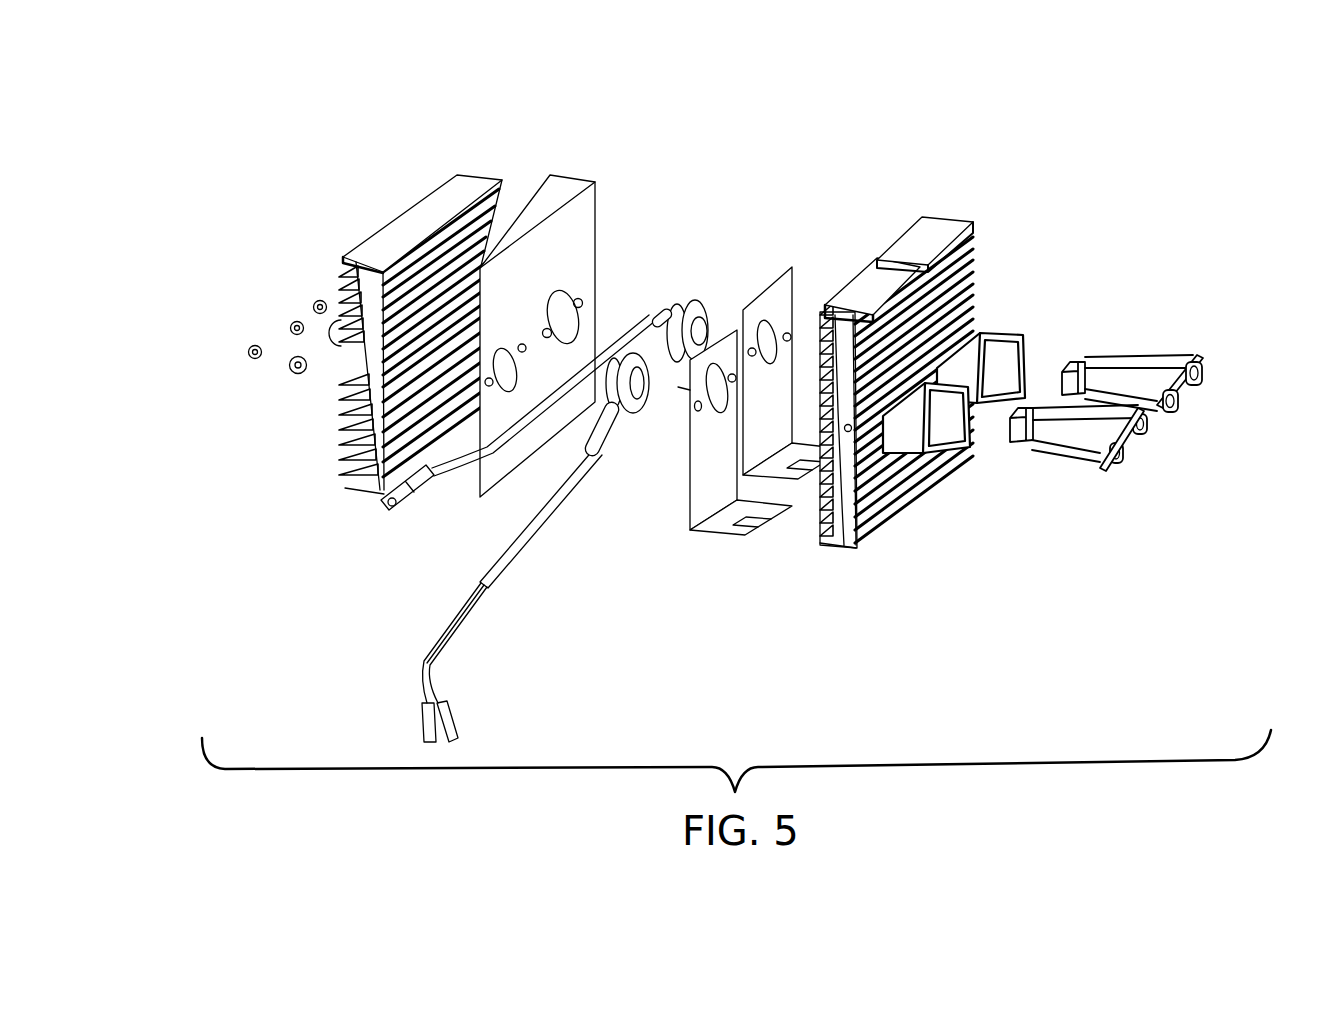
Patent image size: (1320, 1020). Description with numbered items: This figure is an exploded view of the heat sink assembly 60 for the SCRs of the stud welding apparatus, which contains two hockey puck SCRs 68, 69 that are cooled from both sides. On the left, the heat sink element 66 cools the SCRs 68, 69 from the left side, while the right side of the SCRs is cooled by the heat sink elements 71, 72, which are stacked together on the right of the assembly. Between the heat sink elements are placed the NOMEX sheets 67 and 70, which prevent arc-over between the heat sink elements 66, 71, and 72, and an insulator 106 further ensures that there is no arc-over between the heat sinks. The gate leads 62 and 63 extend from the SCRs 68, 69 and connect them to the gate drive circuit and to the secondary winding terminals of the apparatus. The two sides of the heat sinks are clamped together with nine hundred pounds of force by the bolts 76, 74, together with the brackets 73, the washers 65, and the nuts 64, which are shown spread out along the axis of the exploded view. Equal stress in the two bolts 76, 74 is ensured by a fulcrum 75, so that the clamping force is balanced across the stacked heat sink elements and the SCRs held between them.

The heat sink assembly 60 is at (865, 95).
The gate lead 62 is at (527, 417).
The gate lead 63 is at (518, 563).
The nuts 64 is at (262, 342).
The washers 65 is at (294, 375).
The heat sink element 66 is at (482, 176).
The NOMEX sheet 67 is at (562, 176).
The SCR 68 is at (697, 302).
The SCR 69 is at (626, 414).
The NOMEX sheet 70 is at (787, 268).
The heat sink element 71 is at (868, 544).
The heat sink element 72 is at (922, 214).
The brackets 73 is at (1188, 389).
The bolt 74 is at (1022, 450).
The fulcrum 75 is at (1071, 361).
The bolt 76 is at (1204, 370).
The insulator 106 is at (1011, 329).